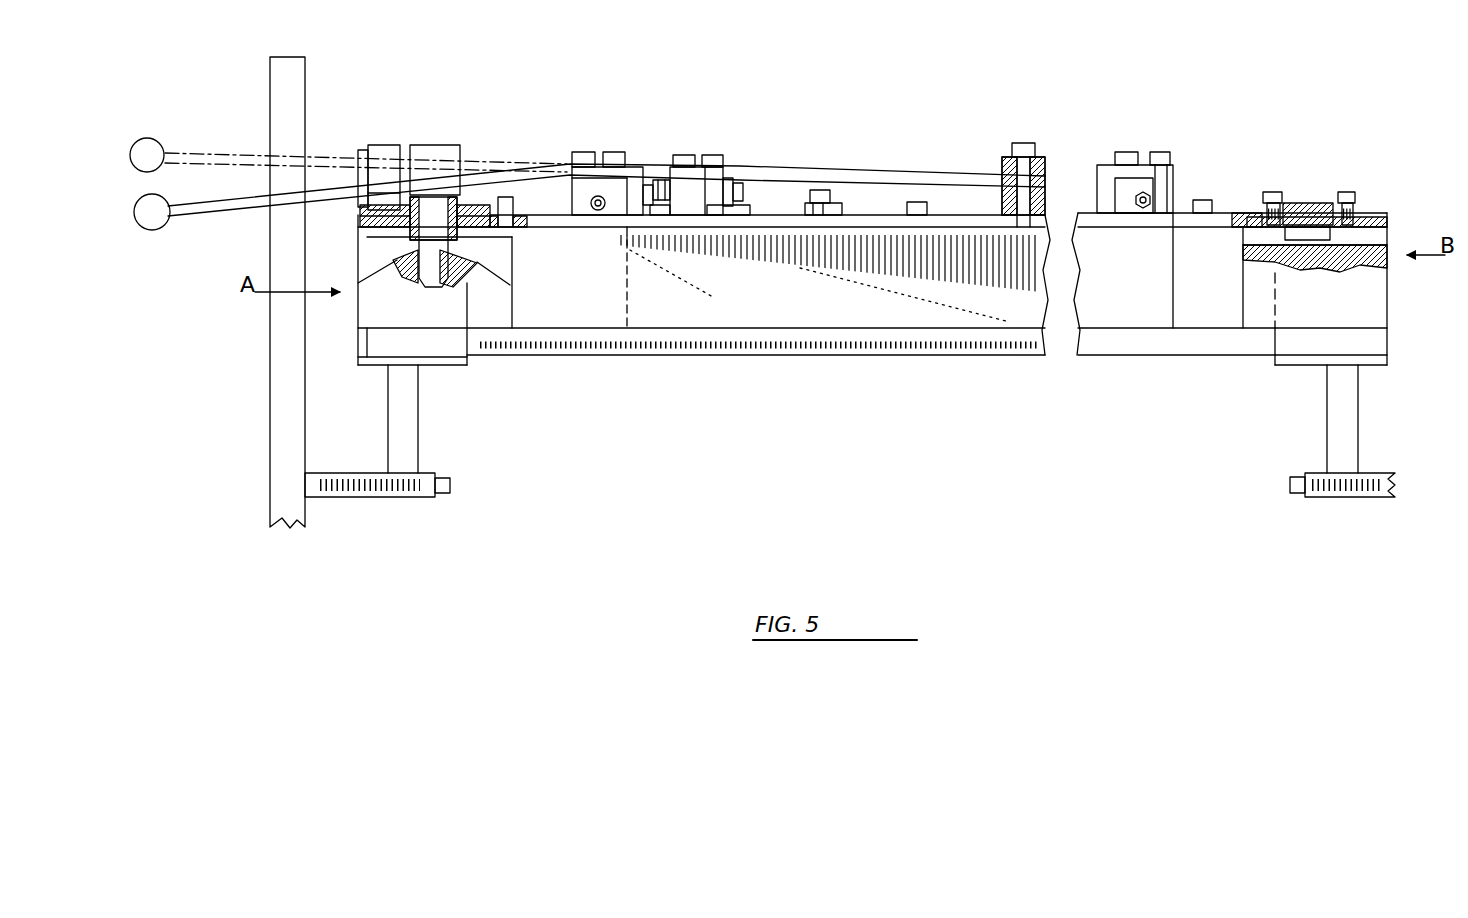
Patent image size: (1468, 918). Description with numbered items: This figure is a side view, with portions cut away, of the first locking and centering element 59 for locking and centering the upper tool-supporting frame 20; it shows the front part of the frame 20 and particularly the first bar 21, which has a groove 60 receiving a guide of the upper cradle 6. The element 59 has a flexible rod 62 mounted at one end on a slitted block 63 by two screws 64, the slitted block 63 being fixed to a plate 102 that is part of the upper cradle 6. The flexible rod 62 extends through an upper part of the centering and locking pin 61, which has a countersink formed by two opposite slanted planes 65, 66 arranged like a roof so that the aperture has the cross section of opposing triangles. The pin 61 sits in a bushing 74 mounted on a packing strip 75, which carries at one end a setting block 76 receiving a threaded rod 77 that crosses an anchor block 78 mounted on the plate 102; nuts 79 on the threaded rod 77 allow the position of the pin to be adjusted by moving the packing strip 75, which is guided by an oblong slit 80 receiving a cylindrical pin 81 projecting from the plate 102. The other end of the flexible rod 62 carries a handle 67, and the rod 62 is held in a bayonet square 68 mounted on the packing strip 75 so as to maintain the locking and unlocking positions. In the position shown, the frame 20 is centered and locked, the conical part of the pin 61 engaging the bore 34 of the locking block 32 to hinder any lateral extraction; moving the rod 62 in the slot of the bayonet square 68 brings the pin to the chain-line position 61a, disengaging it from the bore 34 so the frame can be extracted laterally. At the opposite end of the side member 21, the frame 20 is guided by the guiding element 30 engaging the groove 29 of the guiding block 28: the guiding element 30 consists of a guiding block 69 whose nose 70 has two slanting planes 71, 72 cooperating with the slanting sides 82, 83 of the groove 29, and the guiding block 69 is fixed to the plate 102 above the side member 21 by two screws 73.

The upper cradle 6 is at (911, 362).
The upper tool-supporting frame 20 is at (820, 273).
The first bar 21 is at (762, 312).
The guiding block 28 is at (1362, 303).
The groove 29 is at (1362, 240).
The guiding element 30 is at (1318, 205).
The locking block 32 is at (445, 305).
The bore 34 is at (443, 283).
The first locking and centering element 59 is at (730, 145).
The groove 60 is at (683, 337).
The centering and locking pin 61 is at (407, 285).
The chain-line position of the centering and locking pin 61a is at (445, 185).
The flexible rod 62 is at (830, 168).
The slitted block 63 is at (1040, 157).
The screws 64 is at (1017, 143).
The slanted plane 65 is at (360, 222).
The slanted plane 66 is at (418, 178).
The handle 67 is at (153, 222).
The bayonet square 68 is at (358, 183).
The guiding block 69 is at (1290, 205).
The nose 70 is at (1340, 258).
The slanting plane 71 is at (1190, 228).
The slanting plane 72 is at (1290, 232).
The screws 73 is at (1266, 192).
The bushing 74 is at (480, 205).
The packing strip 75 is at (565, 218).
The setting block 76 is at (645, 178).
The threaded rod 77 is at (662, 178).
The anchor block 78 is at (695, 187).
The nuts 79 is at (652, 188).
The oblong slit 80 is at (517, 200).
The cylindrical pin 81 is at (504, 230).
The slanting side 82 is at (1376, 206).
The slanting side 83 is at (1385, 220).
The plate 102 is at (957, 220).